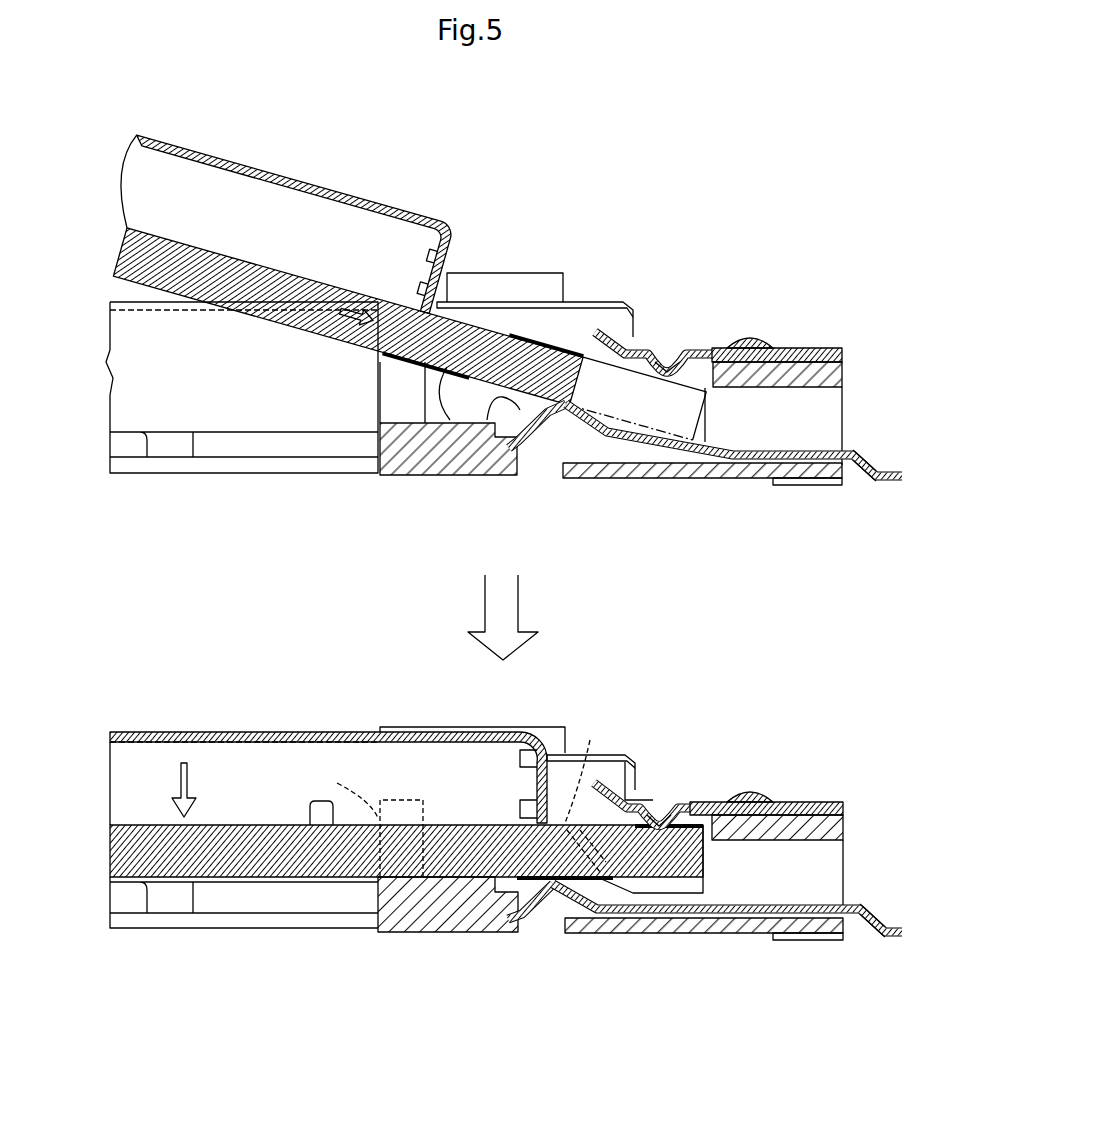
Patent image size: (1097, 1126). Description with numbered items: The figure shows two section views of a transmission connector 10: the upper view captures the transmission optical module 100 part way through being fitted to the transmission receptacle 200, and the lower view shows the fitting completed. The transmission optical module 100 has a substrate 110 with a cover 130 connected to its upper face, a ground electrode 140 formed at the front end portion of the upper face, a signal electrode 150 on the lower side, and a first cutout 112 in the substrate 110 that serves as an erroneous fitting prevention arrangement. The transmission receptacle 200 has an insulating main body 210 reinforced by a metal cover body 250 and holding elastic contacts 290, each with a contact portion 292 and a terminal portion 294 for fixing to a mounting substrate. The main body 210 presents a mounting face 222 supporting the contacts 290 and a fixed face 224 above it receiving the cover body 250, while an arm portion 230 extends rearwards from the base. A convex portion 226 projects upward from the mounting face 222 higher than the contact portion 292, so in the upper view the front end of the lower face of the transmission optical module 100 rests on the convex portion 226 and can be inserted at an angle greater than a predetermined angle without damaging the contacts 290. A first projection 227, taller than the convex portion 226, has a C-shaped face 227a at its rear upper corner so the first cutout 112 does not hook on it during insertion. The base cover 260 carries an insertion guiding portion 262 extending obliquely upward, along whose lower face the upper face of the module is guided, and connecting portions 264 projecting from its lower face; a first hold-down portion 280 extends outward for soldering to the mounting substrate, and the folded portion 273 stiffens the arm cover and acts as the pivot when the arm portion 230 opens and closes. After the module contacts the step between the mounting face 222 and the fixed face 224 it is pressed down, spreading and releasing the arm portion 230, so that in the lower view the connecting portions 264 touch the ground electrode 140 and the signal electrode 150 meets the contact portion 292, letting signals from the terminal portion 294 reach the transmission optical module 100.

The transmission connector 10 is at (805, 160).
The transmission optical module 100 is at (400, 183).
The substrate 110 is at (123, 247).
The first cutout 112 is at (285, 335).
The cover 130 is at (268, 166).
The ground electrode 140 is at (566, 355).
The signal electrode 150 is at (457, 372).
The transmission receptacle 200 is at (722, 505).
The main body 210 is at (670, 482).
The mounting face 222 is at (437, 420).
The fixed face 224 is at (812, 358).
The convex portion 226 is at (500, 398).
The first projection 227 is at (390, 403).
The C-shaped face 227a is at (380, 800).
The arm portion 230 is at (530, 318).
The cover body 250 is at (826, 350).
The base cover 260 is at (786, 352).
The insertion guiding portion 262 is at (604, 332).
The connecting portion 264 is at (672, 378).
The folded portion 273 is at (470, 282).
The first hold-down portion 280 is at (812, 487).
The contact 290 is at (733, 453).
The contact portion 292 is at (556, 440).
The terminal portion 294 is at (890, 478).